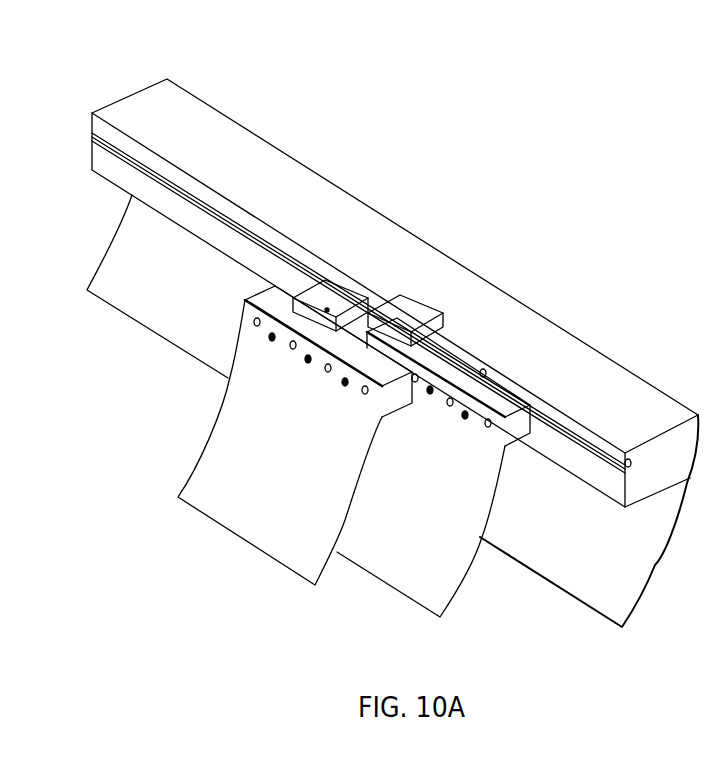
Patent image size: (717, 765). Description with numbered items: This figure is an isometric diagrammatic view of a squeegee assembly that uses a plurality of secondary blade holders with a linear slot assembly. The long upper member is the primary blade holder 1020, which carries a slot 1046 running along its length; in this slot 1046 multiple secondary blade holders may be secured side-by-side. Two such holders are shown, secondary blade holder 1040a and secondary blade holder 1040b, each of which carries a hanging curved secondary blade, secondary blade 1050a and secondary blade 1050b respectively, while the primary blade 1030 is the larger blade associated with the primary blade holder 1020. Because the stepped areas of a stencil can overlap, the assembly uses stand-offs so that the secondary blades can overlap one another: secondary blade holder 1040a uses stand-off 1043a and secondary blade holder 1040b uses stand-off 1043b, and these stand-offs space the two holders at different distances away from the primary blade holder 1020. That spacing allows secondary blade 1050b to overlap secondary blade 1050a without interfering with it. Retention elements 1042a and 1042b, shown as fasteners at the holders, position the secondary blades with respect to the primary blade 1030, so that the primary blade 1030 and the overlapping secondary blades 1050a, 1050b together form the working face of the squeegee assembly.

The primary blade holder 1020 is at (533, 343).
The primary blade 1030 is at (595, 532).
The secondary blade holder 1040a is at (460, 375).
The secondary blade holder 1040b is at (270, 302).
The retention element 1042a is at (428, 386).
The retention element 1042b is at (266, 339).
The stand-off 1043a is at (480, 368).
The stand-off 1043b is at (327, 308).
The slot 1046 is at (628, 459).
The secondary blade 1050a is at (460, 484).
The secondary blade 1050b is at (305, 452).